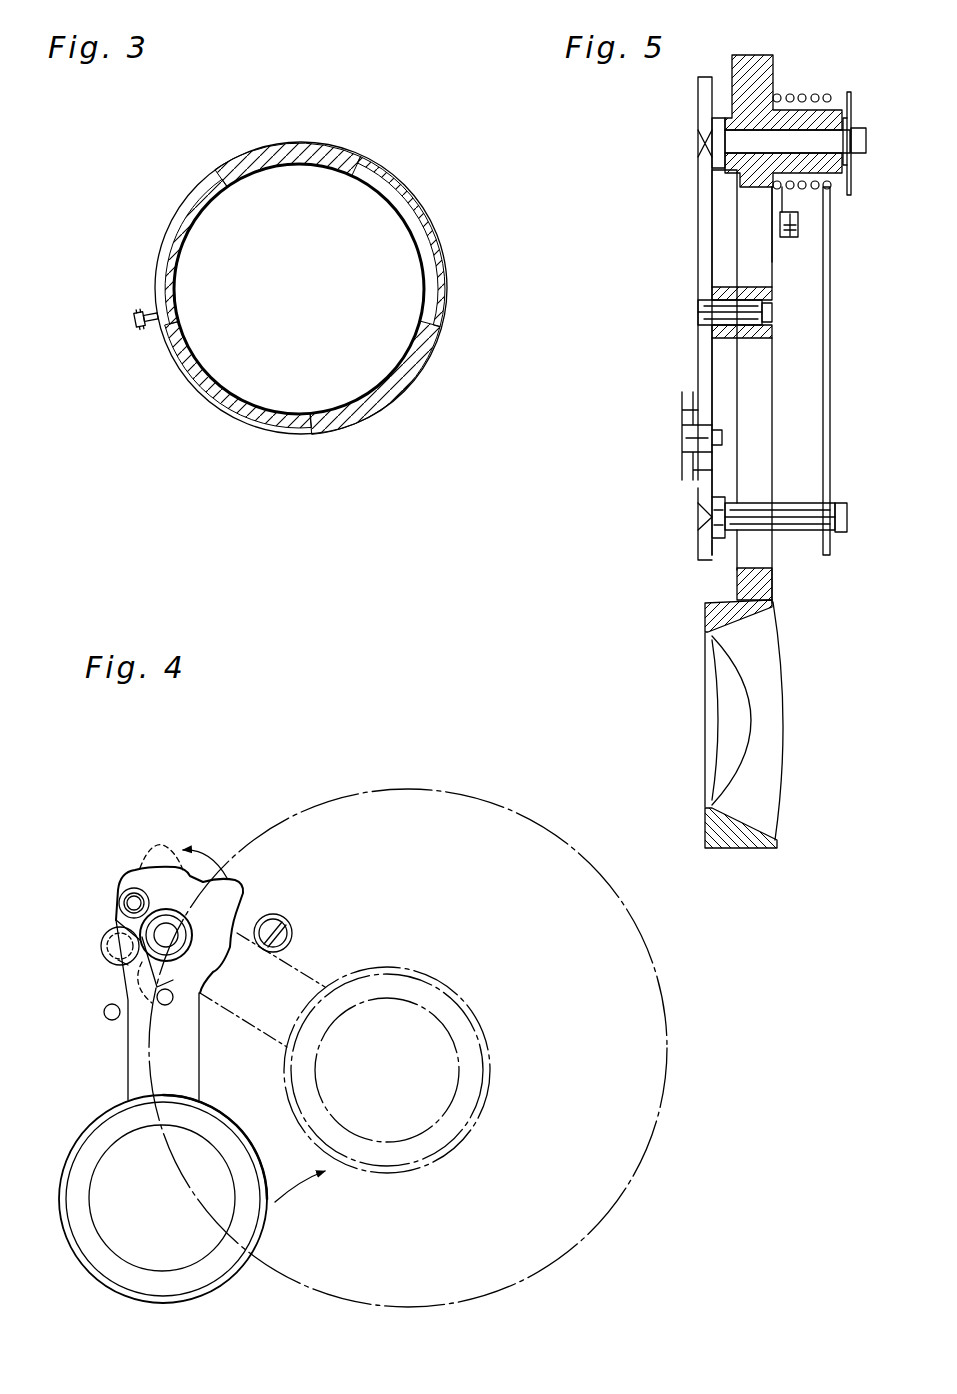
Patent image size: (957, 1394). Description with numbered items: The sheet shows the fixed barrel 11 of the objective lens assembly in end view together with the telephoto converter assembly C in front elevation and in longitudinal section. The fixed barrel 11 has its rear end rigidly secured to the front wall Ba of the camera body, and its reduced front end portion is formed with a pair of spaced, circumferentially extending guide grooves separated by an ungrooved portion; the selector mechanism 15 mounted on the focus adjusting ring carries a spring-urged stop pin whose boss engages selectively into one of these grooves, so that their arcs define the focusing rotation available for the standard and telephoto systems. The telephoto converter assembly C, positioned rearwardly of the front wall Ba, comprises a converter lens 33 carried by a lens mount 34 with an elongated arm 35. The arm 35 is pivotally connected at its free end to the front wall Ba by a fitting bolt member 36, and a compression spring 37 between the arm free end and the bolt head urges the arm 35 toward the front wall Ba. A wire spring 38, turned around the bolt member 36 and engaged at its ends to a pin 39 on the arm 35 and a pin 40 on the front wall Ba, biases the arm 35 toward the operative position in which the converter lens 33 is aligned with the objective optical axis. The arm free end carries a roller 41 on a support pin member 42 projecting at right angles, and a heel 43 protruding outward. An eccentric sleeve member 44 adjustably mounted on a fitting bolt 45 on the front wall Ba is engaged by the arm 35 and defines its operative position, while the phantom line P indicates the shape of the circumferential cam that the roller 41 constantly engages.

In FIG. 3, the fixed barrel 11 is at (385, 398).
In FIG. 3, the selector mechanism 15 is at (146, 328).
In FIG. 5, the converter lens 33 is at (778, 710).
In FIG. 4, the converter lens 33 is at (140, 1232).
In FIG. 5, the lens mount 34 is at (748, 850).
In FIG. 4, the lens mount 34 is at (208, 1282).
In FIG. 5, the arm 35 is at (748, 548).
In FIG. 4, the arm 35 is at (141, 1076).
In FIG. 5, the fitting bolt member 36 is at (822, 140).
In FIG. 4, the fitting bolt member 36 is at (176, 933).
In FIG. 5, the compression spring 37 is at (798, 97).
In FIG. 5, the wire spring 38 is at (828, 310).
In FIG. 4, the wire spring 38 is at (118, 960).
In FIG. 5, the pin 39 is at (790, 232).
In FIG. 4, the pin 39 is at (170, 1003).
In FIG. 5, the pin 40 is at (797, 515).
In FIG. 4, the pin 40 is at (108, 1015).
In FIG. 4, the roller 41 is at (105, 918).
In FIG. 4, the support pin member 42 is at (103, 937).
In FIG. 4, the heel 43 is at (216, 888).
In FIG. 5, the eccentric sleeve member 44 is at (722, 287).
In FIG. 4, the eccentric sleeve member 44 is at (293, 940).
In FIG. 5, the fitting bolt 45 is at (716, 310).
In FIG. 4, the fitting bolt 45 is at (288, 930).
In FIG. 5, the front wall Ba is at (706, 190).
In FIG. 5, the telephoto converter assembly C is at (845, 431).
In FIG. 4, the telephoto converter assembly C is at (203, 829).
In FIG. 4, the phantom line P is at (436, 792).